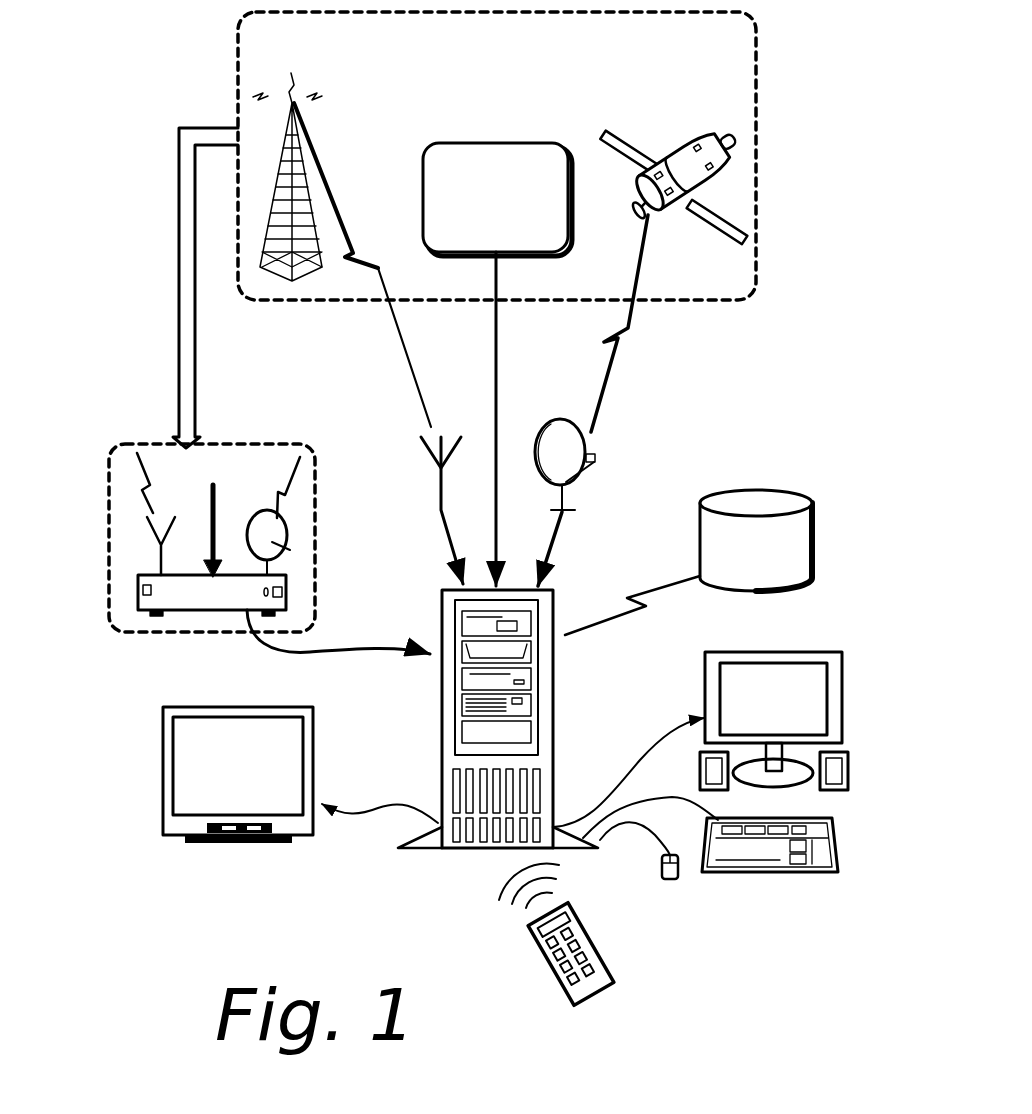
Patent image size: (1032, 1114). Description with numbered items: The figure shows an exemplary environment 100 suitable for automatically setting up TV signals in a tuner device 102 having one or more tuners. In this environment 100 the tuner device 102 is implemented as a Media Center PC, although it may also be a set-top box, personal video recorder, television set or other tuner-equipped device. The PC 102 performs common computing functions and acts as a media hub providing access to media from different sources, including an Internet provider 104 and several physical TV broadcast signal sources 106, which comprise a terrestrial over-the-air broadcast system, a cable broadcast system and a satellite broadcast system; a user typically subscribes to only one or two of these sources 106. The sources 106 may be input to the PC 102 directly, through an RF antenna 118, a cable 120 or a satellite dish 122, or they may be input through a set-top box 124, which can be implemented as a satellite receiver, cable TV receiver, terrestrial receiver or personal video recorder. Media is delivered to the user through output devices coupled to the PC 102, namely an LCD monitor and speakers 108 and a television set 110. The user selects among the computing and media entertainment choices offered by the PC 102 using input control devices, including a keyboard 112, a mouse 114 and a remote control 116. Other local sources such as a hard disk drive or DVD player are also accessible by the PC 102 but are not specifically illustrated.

The exemplary environment 100 is at (144, 80).
The tuner device 102 is at (440, 752).
The Internet provider 104 is at (741, 579).
The TV broadcast signal sources 106 is at (586, 48).
The LCD monitor and speakers 108 is at (812, 652).
The television set 110 is at (198, 707).
The keyboard 112 is at (836, 832).
The mouse 114 is at (672, 879).
The remote control 116 is at (605, 968).
The RF antenna 118 is at (438, 462).
The cable 120 is at (497, 388).
The satellite dish 122 is at (583, 450).
The set-top box 124 is at (233, 607).